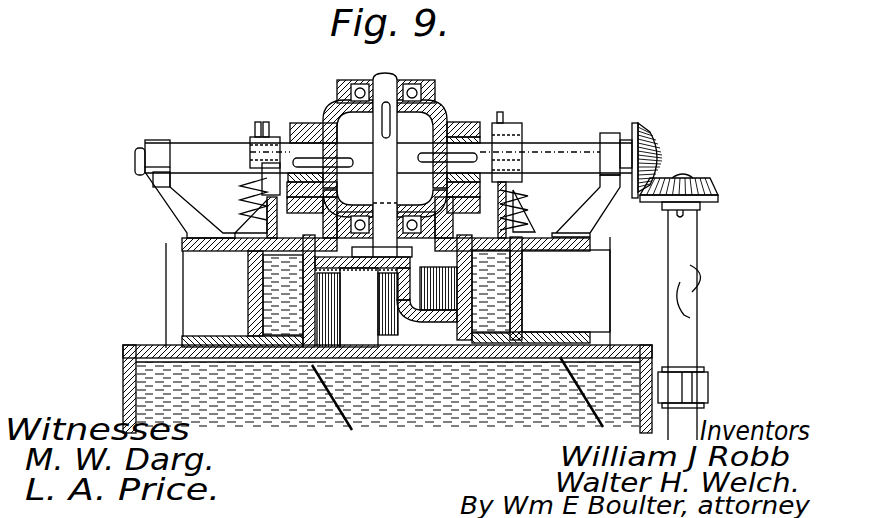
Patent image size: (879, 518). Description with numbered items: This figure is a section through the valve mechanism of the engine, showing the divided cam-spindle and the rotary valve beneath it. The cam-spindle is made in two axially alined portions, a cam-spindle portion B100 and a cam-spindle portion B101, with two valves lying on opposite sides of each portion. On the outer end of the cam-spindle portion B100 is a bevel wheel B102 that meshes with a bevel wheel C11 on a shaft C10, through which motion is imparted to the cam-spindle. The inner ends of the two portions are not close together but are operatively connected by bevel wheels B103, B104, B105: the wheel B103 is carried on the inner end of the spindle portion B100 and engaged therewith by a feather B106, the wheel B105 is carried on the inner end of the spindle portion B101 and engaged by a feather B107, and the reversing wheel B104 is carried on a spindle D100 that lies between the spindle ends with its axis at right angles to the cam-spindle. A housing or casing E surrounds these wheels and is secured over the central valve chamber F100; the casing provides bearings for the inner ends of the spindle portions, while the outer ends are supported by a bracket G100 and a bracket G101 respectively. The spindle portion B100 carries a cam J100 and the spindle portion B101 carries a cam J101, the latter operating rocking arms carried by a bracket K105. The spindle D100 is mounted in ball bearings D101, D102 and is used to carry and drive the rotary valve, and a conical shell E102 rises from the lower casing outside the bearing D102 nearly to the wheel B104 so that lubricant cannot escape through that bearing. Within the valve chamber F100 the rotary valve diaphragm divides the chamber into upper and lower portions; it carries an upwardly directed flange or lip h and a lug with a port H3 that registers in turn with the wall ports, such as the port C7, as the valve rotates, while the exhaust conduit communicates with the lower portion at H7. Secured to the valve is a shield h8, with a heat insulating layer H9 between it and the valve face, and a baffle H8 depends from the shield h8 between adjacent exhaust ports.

The gear casing E is at (330, 128).
The feather B107 is at (292, 152).
The ball bearing D101 is at (358, 88).
The spindle D100 is at (392, 95).
The bevel wheel B104 is at (420, 118).
The bevel wheel B103 is at (455, 153).
The feather B106 is at (511, 135).
The cam J100 is at (497, 146).
The cam-spindle portion B100 is at (587, 160).
The bevel wheel B102 is at (644, 150).
The bevel wheel C11 is at (700, 180).
The bracket G100 is at (612, 188).
The shaft C10 is at (682, 312).
The valve chamber F100 is at (505, 237).
The ball bearing D102 is at (425, 243).
The bracket G101 is at (160, 146).
The cam J101 is at (247, 178).
The cam-spindle portion B101 is at (220, 116).
The conical shell E102 is at (340, 124).
The bracket K105 is at (268, 204).
The bevel wheel B105 is at (263, 252).
The flange or lip h is at (263, 283).
The heat insulating layer H9 is at (330, 347).
The baffle H8 is at (390, 327).
The exhaust communication point H7 is at (405, 322).
The port C7 is at (462, 312).
The port H3 is at (458, 307).
The shield h8 is at (362, 273).